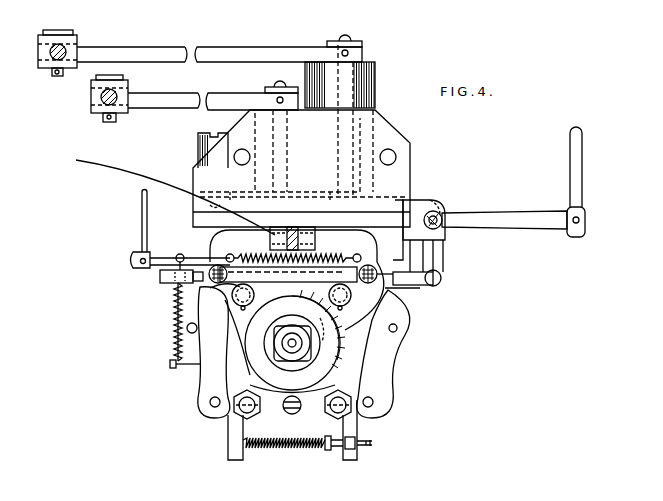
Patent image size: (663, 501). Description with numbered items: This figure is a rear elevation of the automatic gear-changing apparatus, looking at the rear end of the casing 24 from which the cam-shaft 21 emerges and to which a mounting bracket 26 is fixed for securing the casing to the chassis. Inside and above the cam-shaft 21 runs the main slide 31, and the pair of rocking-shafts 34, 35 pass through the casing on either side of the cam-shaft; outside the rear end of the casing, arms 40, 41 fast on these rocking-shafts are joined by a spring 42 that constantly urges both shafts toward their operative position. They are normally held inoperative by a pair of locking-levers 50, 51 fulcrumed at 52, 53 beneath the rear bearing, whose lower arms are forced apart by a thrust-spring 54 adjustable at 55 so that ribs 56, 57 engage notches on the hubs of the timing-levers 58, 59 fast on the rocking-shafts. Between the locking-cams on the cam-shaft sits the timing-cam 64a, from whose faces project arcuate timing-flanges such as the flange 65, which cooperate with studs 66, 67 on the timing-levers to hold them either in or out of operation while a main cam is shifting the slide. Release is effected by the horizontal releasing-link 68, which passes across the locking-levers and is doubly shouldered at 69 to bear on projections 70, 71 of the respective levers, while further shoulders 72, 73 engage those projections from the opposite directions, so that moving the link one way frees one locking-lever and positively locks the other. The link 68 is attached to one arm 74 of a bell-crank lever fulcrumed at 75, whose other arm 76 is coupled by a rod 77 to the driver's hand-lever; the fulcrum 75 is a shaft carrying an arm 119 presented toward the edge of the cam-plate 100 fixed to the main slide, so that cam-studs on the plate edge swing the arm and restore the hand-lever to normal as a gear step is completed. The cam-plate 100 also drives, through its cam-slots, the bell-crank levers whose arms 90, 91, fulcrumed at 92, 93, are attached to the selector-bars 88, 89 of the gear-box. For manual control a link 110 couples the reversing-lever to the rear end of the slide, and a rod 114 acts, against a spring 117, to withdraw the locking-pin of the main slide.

The cam-shaft 21 is at (290, 345).
The casing 24 is at (200, 403).
The bracket 26 is at (400, 125).
The main slide 31 is at (165, 194).
The rocking-shaft 34 is at (227, 302).
The rocking-shaft 35 is at (402, 330).
The arm 40 is at (222, 270).
The arm 41 is at (440, 263).
The spring 42 is at (322, 258).
The locking-lever 50 is at (170, 364).
The locking-lever 51 is at (368, 350).
The fulcrum 52 is at (247, 405).
The fulcrum 53 is at (358, 427).
The thrust-spring 54 is at (297, 449).
The adjustment 55 is at (372, 446).
The rib 56 is at (180, 304).
The rib 57 is at (385, 305).
The timing-lever 58 is at (228, 334).
The timing-lever 59 is at (395, 340).
The timing-cam 64a is at (358, 370).
The timing-flange 65 is at (215, 348).
The stud 66 is at (289, 249).
The stud 67 is at (343, 256).
The releasing-link 68 is at (160, 275).
The shoulder 69 is at (372, 266).
The projection 70 is at (197, 272).
The projection 71 is at (395, 300).
The shoulder 72 is at (212, 268).
The shoulder 73 is at (420, 288).
The arm of bell-crank lever 74 is at (445, 243).
The fulcrum 75 is at (440, 210).
The arm of bell-crank lever 76 is at (494, 212).
The rod 77 is at (574, 170).
The selector-bar 88 is at (50, 63).
The selector-bar 89 is at (105, 95).
The arm of bell-crank lever 90 is at (88, 56).
The arm of bell-crank lever 91 is at (165, 100).
The fulcrum 92 is at (398, 68).
The fulcrum 93 is at (352, 107).
The cam-plate 100 is at (236, 255).
The link 110 is at (200, 160).
The rod 114 is at (142, 205).
The spring 117 is at (175, 294).
The arm 119 is at (420, 200).